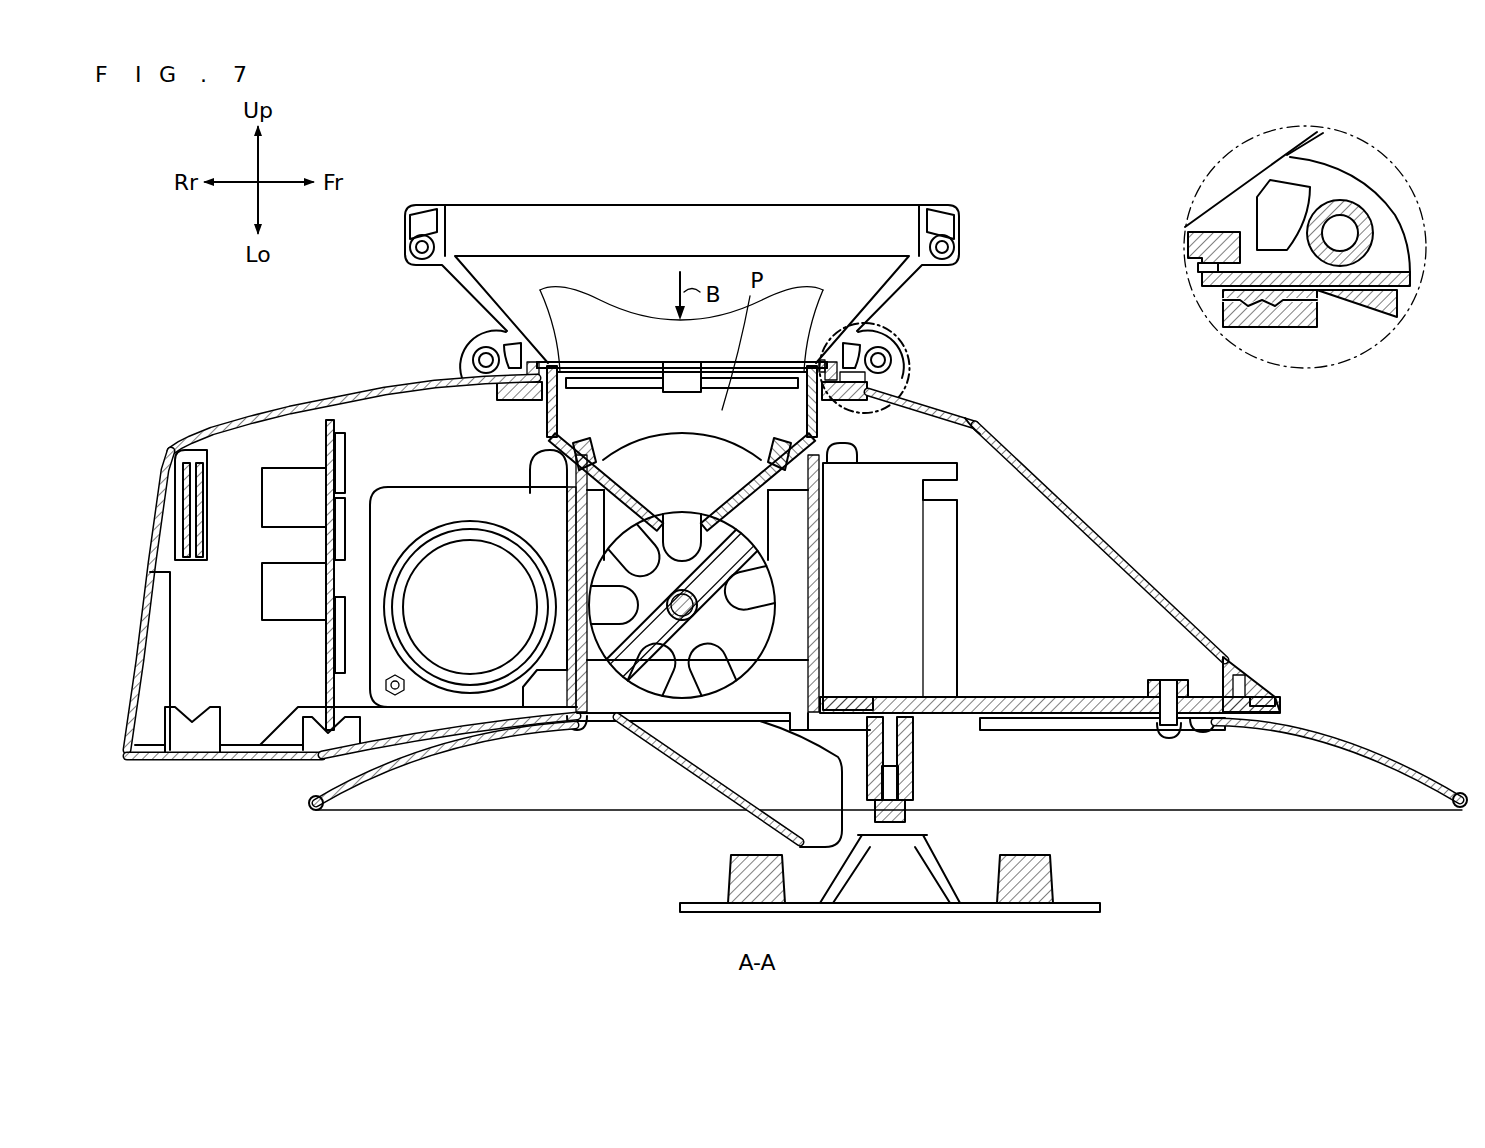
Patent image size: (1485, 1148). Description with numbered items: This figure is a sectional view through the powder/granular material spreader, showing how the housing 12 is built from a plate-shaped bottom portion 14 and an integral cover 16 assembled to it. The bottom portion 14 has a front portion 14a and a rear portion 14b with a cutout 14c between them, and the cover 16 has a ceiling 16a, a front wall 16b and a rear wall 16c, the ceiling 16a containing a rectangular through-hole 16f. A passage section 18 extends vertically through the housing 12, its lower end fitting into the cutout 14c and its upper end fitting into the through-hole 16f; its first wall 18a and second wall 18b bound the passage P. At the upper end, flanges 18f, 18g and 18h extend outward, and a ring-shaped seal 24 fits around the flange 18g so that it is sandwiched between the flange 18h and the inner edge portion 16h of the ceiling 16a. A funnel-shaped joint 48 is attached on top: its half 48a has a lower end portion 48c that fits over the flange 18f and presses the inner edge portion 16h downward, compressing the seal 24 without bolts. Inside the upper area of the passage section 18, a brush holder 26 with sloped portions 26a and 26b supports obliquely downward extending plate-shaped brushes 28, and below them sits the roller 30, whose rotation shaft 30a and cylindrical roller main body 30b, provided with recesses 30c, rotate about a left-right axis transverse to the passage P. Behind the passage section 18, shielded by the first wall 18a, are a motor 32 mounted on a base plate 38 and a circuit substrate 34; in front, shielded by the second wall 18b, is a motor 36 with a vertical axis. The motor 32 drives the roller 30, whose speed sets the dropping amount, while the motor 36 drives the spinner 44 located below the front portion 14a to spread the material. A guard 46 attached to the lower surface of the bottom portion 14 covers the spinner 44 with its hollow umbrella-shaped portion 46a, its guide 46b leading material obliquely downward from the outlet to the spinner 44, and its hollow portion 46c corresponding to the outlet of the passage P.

The housing 12 is at (693, 544).
The bottom portion 14 is at (797, 769).
The front portion 14a is at (1043, 712).
The rear portion 14b is at (227, 762).
The cutout 14c is at (580, 722).
The cover 16 is at (693, 544).
The ceiling 16a is at (355, 396).
The front wall 16b is at (1133, 567).
The rear wall 16c is at (138, 600).
The through-hole 16f is at (520, 400).
The inner edge portion 16h is at (890, 372).
The passage section 18 is at (681, 577).
The first wall 18a is at (568, 550).
The second wall 18b is at (813, 553).
The flange 18f is at (840, 368).
The flange 18g is at (973, 437).
The flange 18h is at (893, 403).
The seal 24 is at (886, 379).
The brush holder 26 is at (651, 406).
The sloped portion 26a is at (556, 395).
The sloped portion 26b is at (810, 395).
The brushes 28 is at (636, 505).
The roller 30 is at (760, 594).
The rotation shaft 30a is at (685, 618).
The roller main body 30b is at (772, 572).
The recesses 30c is at (672, 528).
The motor 32 is at (430, 567).
The circuit substrate 34 is at (326, 541).
The motor 36 is at (943, 647).
The base plate 38 is at (455, 500).
The spinner 44 is at (937, 880).
The guard 46 is at (885, 808).
The umbrella-shaped portion 46a is at (420, 748).
The guide 46b is at (693, 777).
The hollow portion 46c is at (650, 757).
The joint 48 is at (905, 205).
The half 48a is at (760, 205).
The lower end portion 48c is at (877, 367).